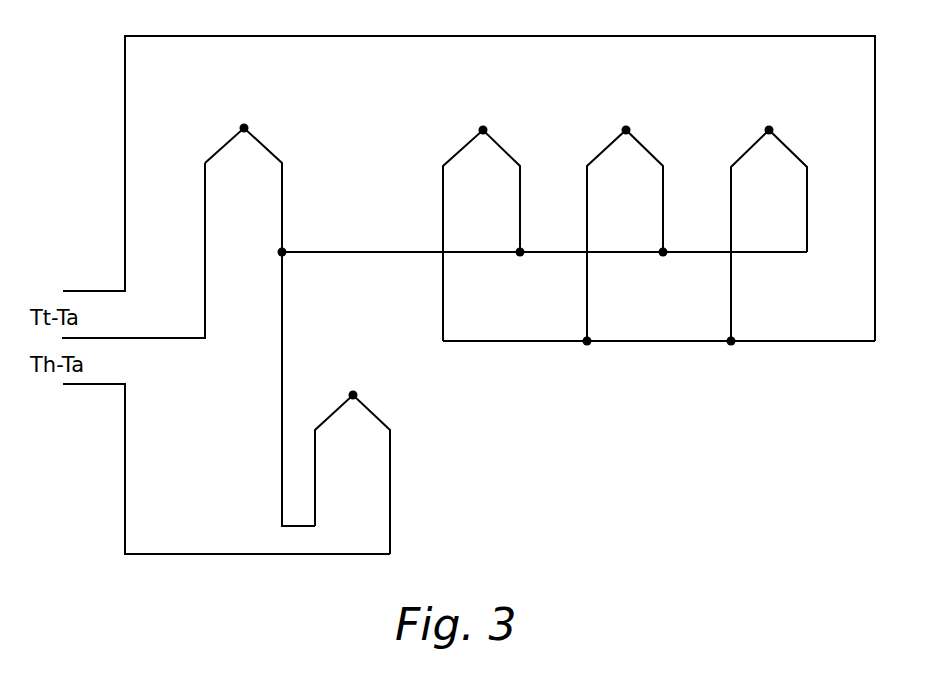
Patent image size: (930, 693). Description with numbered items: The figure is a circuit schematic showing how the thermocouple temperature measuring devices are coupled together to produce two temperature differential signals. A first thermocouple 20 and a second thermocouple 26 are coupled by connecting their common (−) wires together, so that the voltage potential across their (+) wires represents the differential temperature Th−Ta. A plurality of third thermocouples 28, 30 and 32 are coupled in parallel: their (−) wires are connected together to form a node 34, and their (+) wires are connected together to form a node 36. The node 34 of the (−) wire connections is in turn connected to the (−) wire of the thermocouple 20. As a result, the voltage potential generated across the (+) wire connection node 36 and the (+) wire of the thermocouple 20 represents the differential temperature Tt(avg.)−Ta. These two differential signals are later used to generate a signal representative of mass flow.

The first thermocouple 20 is at (247, 161).
The second thermocouple 26 is at (352, 427).
The third thermocouple 28 is at (483, 162).
The third thermocouple 30 is at (627, 163).
The third thermocouple 32 is at (770, 163).
The node 34 is at (350, 252).
The node 36 is at (779, 343).